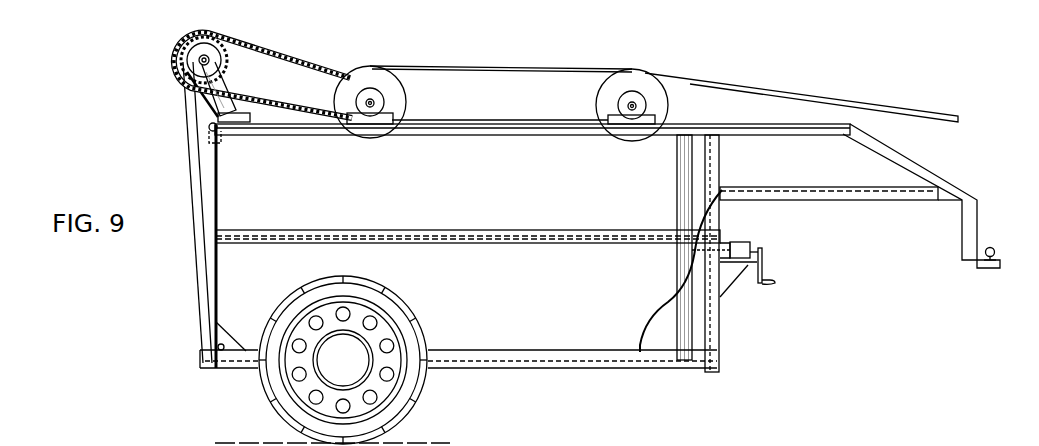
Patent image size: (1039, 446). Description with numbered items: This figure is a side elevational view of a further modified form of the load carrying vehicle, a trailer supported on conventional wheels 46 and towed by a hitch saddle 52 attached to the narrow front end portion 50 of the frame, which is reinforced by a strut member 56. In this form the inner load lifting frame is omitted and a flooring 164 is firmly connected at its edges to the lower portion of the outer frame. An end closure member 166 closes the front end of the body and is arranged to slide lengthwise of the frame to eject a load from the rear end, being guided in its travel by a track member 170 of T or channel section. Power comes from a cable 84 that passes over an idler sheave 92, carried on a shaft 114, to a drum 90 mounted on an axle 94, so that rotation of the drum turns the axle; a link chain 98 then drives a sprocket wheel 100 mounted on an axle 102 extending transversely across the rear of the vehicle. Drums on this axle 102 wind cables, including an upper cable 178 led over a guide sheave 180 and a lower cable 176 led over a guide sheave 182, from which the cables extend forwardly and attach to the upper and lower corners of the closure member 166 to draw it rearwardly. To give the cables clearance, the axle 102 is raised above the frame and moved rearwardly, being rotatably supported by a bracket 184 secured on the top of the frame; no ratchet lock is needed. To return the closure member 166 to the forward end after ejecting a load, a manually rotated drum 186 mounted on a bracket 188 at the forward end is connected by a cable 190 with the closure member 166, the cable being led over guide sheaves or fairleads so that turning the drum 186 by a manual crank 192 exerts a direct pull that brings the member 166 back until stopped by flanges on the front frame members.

The wheel 46 is at (410, 398).
The narrow front end portion 50 is at (961, 238).
The hitch saddle 52 is at (991, 248).
The strut member 56 is at (890, 200).
The cable 84 is at (913, 108).
The drum 90 is at (383, 50).
The idler sheave 92 is at (642, 78).
The axle 94 is at (374, 104).
The link chain 98 is at (312, 68).
The sprocket wheel 100 is at (230, 48).
The axle 102 is at (201, 58).
The shaft 114 is at (637, 108).
The flooring 164 is at (240, 369).
The end closure member 166 is at (682, 183).
The track member 170 is at (428, 230).
The cable 176 is at (193, 150).
The cable 178 is at (195, 101).
The guide sheave 180 is at (222, 140).
The guide sheave 182 is at (222, 337).
The bracket 184 is at (230, 90).
The manually rotated drum 186 is at (750, 243).
The bracket 188 is at (747, 268).
The cable 190 is at (727, 243).
The manual crank 192 is at (766, 257).